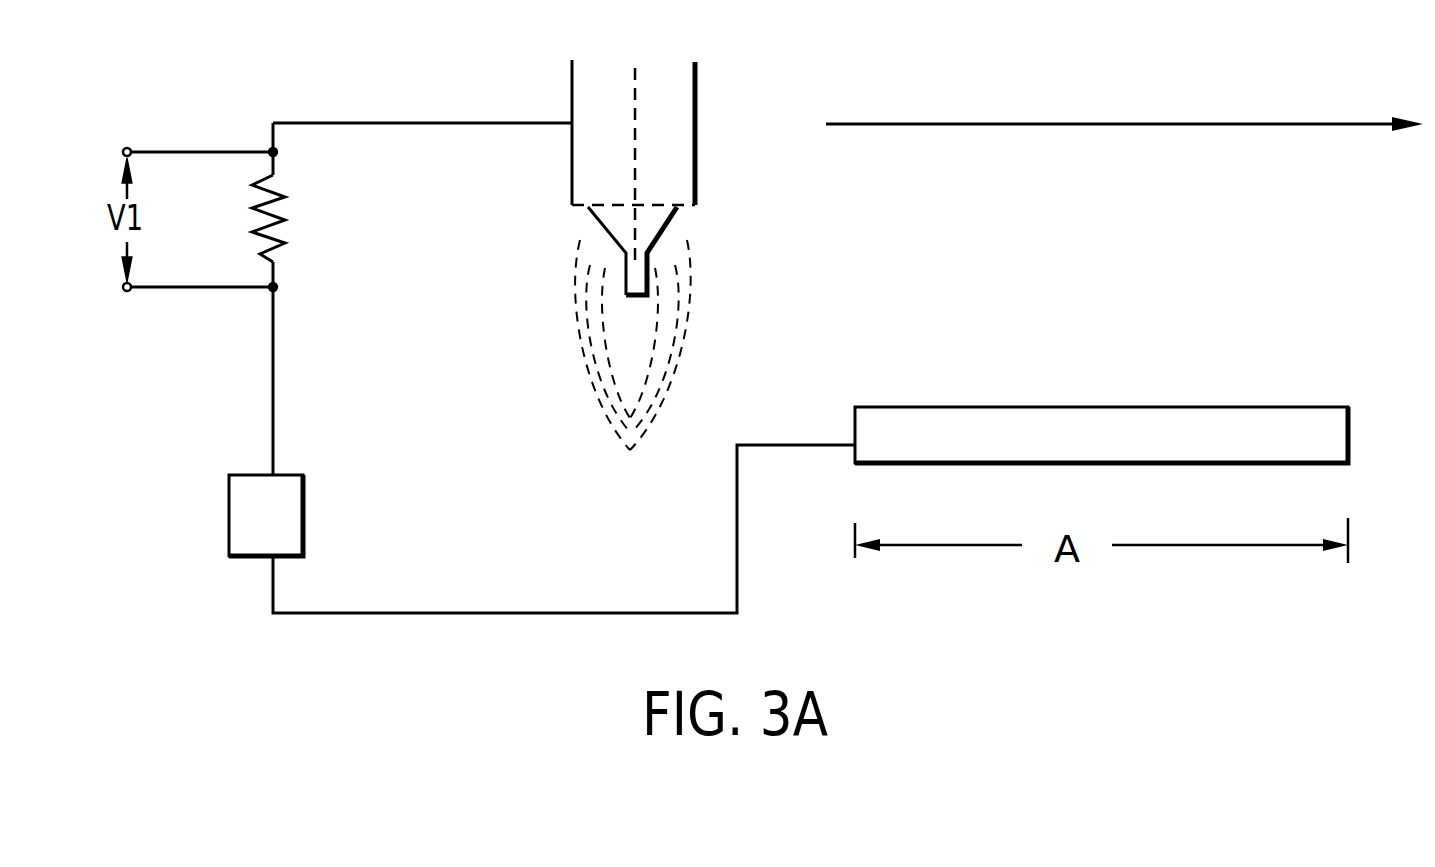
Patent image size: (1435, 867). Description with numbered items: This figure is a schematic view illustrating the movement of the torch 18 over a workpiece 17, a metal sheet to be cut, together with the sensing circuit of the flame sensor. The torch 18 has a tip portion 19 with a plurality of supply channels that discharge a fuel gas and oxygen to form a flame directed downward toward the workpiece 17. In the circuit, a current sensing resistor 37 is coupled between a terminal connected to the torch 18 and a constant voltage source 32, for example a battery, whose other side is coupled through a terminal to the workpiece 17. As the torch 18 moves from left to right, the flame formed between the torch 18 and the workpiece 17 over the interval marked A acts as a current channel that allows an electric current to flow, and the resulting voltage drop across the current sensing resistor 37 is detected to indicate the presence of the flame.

The workpiece 17 is at (1205, 405).
The torch 18 is at (680, 107).
The tip portion 19 is at (607, 218).
The constant voltage source 32 is at (305, 497).
The current sensing resistor 37 is at (300, 184).